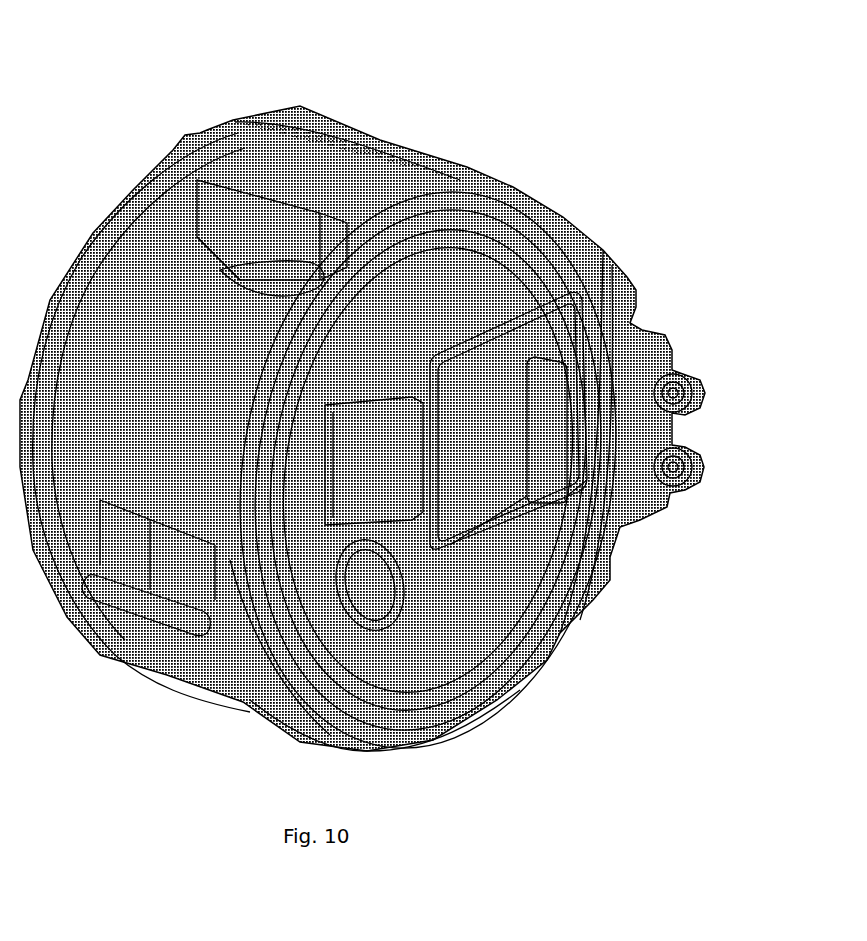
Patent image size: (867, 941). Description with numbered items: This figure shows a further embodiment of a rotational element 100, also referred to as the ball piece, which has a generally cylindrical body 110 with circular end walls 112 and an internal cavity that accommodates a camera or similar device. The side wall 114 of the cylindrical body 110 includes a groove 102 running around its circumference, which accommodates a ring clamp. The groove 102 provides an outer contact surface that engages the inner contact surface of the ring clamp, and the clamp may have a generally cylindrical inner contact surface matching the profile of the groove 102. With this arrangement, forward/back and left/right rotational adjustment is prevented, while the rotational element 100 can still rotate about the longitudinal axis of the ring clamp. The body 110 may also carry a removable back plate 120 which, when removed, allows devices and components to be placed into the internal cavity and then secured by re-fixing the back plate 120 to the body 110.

The rotational element 100 is at (563, 127).
The groove 102 is at (305, 165).
The cylindrical body 110 is at (455, 170).
The circular end wall 112 is at (560, 252).
The side wall 114 is at (243, 700).
The back plate 120 is at (133, 205).